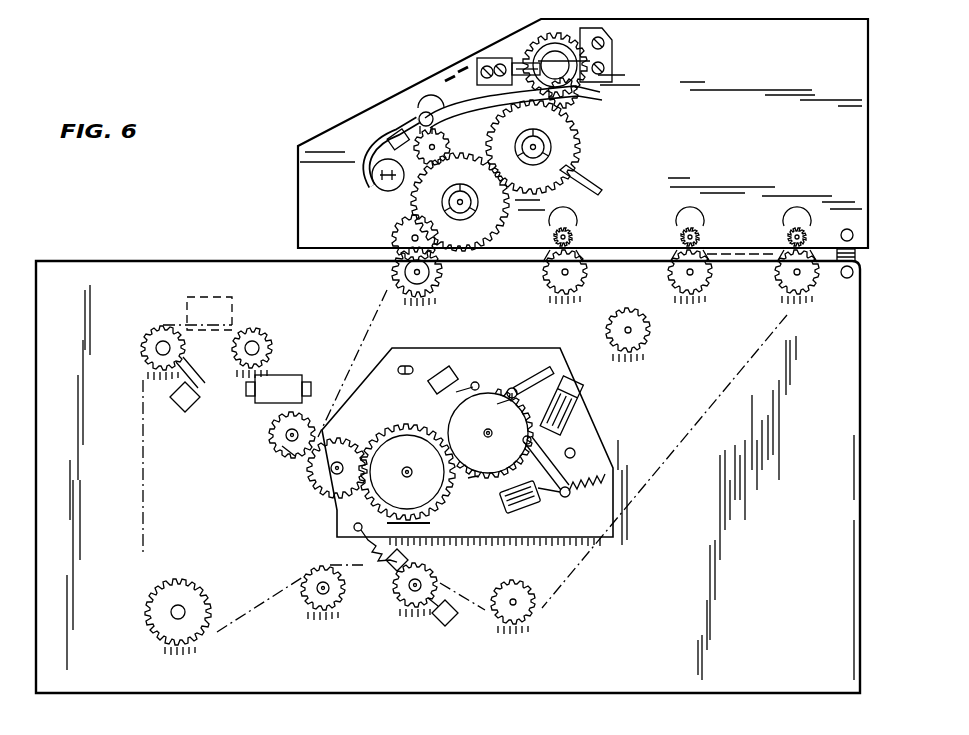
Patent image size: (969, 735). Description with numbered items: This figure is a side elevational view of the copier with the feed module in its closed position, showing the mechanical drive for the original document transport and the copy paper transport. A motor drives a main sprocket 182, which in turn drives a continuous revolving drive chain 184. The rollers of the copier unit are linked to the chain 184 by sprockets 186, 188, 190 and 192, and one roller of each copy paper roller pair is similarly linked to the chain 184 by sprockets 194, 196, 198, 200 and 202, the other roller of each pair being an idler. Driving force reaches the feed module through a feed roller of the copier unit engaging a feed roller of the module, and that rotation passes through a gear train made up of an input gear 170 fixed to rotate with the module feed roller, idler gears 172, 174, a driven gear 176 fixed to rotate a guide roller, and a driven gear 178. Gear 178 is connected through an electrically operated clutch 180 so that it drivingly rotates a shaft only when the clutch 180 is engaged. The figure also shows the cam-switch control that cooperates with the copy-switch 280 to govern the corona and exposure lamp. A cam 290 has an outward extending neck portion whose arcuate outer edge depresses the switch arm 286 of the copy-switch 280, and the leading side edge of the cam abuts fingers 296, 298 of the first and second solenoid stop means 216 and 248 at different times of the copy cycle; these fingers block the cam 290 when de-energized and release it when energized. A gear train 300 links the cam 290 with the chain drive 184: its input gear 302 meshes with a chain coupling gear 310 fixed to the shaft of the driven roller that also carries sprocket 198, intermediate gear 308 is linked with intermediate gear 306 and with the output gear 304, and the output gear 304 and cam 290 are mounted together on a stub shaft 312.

The input gear 170 is at (402, 246).
The idler gear 172 is at (412, 197).
The idler gear 174 is at (588, 129).
The driven gear 176 is at (441, 137).
The driven gear 178 is at (600, 97).
The electrically operated clutch 180 is at (608, 56).
The main sprocket 182 is at (193, 578).
The drive chain 184 is at (145, 481).
The sprocket 186 is at (426, 297).
The sprocket 188 is at (543, 273).
The sprocket 190 is at (713, 281).
The sprocket 192 is at (802, 297).
The sprocket 194 is at (160, 327).
The sprocket 196 is at (258, 330).
The sprocket 198 is at (270, 437).
The sprocket 200 is at (312, 612).
The sprocket 202 is at (402, 612).
The first solenoid stop means 216 is at (590, 392).
The second solenoid stop means 248 is at (528, 512).
The copy-switch 280 is at (437, 368).
The switch arm 286 is at (477, 382).
The cam 290 is at (510, 461).
The finger 296 is at (512, 388).
The finger 298 is at (588, 420).
The gear train 300 is at (312, 513).
The input gear 302 is at (308, 480).
The output gear 304 is at (493, 489).
The intermediate gear 306 is at (330, 505).
The intermediate gear 308 is at (430, 524).
The chain coupling gear 310 is at (288, 450).
The stub shaft 312 is at (487, 408).